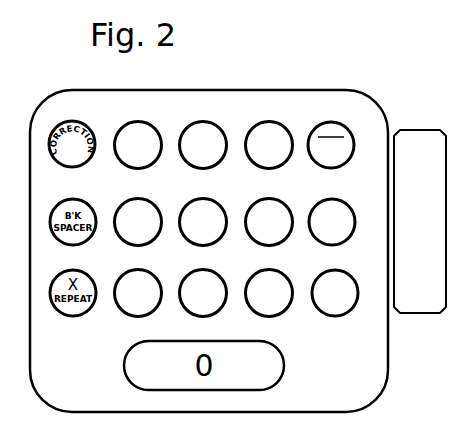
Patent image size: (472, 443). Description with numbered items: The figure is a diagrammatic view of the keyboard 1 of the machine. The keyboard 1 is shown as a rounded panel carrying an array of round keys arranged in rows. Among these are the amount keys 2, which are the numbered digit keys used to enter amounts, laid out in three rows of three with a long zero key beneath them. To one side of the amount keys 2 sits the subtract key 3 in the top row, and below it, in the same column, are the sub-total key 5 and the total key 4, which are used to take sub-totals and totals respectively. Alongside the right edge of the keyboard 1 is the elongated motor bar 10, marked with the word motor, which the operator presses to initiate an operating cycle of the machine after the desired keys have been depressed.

The keyboard 1 is at (100, 98).
The amount keys 2 is at (250, 130).
The subtract key 3 is at (338, 125).
The total key 4 is at (353, 291).
The sub-total key 5 is at (348, 206).
The motor bar 10 is at (418, 130).